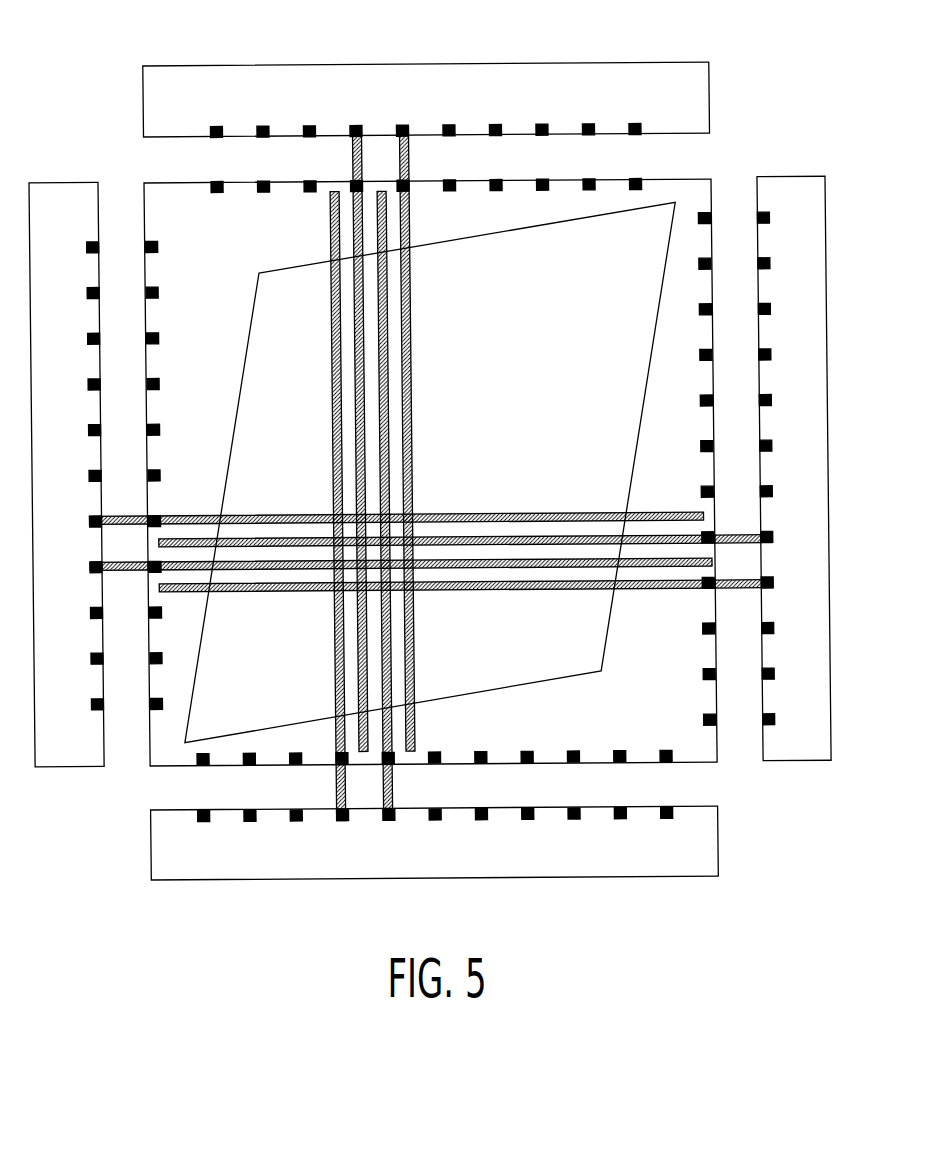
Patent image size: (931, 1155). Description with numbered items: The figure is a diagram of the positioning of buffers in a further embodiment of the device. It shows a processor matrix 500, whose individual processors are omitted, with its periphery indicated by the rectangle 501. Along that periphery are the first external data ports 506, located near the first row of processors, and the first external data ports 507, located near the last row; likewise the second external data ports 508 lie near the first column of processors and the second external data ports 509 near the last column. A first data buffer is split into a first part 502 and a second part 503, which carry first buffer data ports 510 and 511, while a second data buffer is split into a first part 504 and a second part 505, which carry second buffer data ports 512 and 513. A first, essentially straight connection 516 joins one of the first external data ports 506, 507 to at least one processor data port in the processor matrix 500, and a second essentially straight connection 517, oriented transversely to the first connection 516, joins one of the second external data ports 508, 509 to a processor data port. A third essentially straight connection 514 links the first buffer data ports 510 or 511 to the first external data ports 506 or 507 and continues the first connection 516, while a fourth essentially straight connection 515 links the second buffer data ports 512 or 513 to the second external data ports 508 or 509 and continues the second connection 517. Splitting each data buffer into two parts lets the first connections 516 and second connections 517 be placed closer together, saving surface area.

The processor matrix 500 is at (462, 238).
The rectangle 501 is at (673, 180).
The first part of first data buffer 502 is at (598, 880).
The second part of first data buffer 503 is at (173, 65).
The first part of second data buffer 504 is at (800, 762).
The second part of second data buffer 505 is at (68, 768).
The first external data ports 506 is at (205, 766).
The first external data ports 507 is at (218, 182).
The second external data ports 508 is at (713, 537).
The second external data ports 509 is at (151, 569).
The first buffer data ports 510 is at (203, 824).
The first buffer data ports 511 is at (218, 127).
The second buffer data ports 512 is at (775, 537).
The second buffer data ports 513 is at (89, 568).
The third connection 514 is at (409, 157).
The fourth connection 515 is at (125, 516).
The first connection 516 is at (412, 359).
The second connection 517 is at (262, 516).